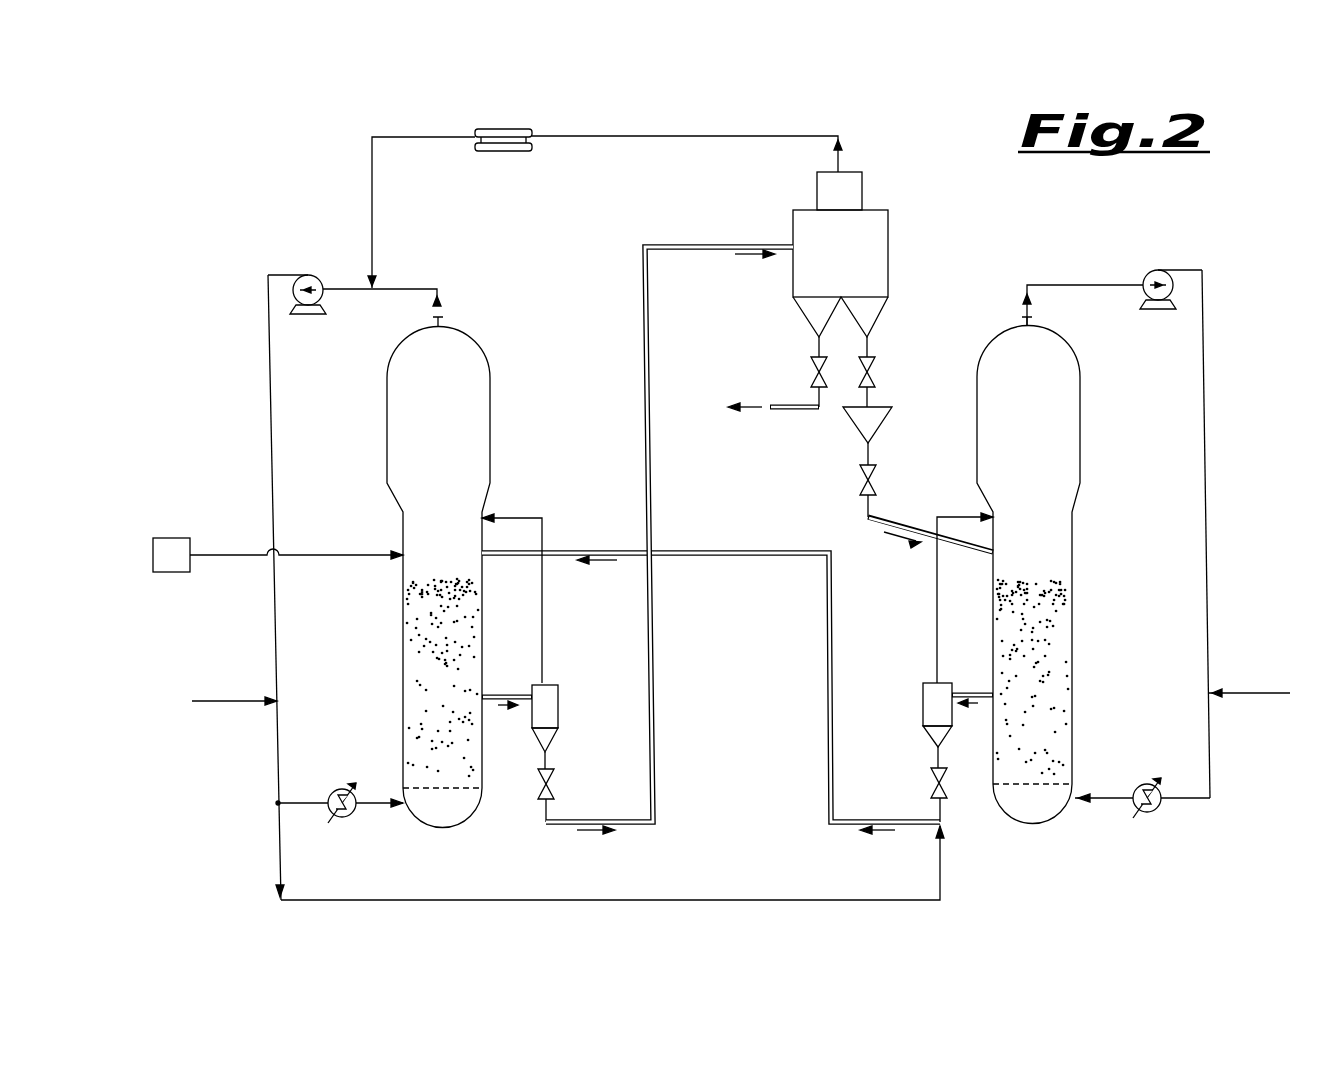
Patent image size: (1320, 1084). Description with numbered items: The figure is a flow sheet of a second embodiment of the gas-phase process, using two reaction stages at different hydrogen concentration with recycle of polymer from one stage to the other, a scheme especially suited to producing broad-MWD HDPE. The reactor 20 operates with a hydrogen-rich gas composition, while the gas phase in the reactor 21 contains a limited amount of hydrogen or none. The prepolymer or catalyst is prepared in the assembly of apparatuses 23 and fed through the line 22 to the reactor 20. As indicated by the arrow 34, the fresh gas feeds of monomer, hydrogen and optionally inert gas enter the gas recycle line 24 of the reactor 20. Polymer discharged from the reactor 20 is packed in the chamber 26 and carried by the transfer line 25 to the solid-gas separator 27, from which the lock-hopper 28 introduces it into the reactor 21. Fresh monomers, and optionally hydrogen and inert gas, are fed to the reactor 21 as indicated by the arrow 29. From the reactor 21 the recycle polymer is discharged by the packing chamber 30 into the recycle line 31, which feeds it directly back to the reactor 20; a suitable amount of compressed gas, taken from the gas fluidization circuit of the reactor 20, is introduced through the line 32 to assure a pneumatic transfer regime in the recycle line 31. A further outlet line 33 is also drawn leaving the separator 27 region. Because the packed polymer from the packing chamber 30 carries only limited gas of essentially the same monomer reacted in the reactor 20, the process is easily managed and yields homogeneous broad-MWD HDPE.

The reactor 20 is at (490, 392).
The reactor 21 is at (1082, 422).
The line 22 is at (233, 555).
The assembly of apparatuses 23 is at (176, 538).
The gas recycle line 24 is at (271, 420).
The transfer line 25 is at (655, 652).
The chamber 26 is at (558, 712).
The solid-gas separator 27 is at (888, 245).
The lock-hopper 28 is at (885, 427).
The arrow 29 is at (1262, 693).
The packing chamber 30 is at (923, 707).
The recycle line 31 is at (737, 550).
The line 32 is at (742, 897).
The fines outlet line 33 is at (782, 407).
The arrow 34 is at (207, 703).